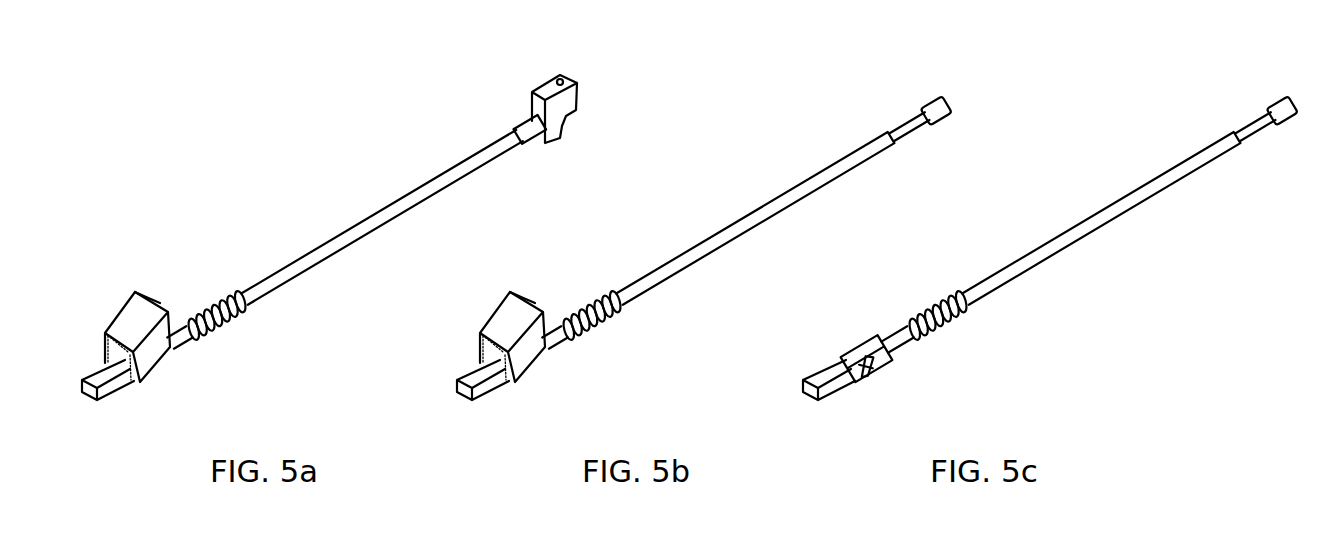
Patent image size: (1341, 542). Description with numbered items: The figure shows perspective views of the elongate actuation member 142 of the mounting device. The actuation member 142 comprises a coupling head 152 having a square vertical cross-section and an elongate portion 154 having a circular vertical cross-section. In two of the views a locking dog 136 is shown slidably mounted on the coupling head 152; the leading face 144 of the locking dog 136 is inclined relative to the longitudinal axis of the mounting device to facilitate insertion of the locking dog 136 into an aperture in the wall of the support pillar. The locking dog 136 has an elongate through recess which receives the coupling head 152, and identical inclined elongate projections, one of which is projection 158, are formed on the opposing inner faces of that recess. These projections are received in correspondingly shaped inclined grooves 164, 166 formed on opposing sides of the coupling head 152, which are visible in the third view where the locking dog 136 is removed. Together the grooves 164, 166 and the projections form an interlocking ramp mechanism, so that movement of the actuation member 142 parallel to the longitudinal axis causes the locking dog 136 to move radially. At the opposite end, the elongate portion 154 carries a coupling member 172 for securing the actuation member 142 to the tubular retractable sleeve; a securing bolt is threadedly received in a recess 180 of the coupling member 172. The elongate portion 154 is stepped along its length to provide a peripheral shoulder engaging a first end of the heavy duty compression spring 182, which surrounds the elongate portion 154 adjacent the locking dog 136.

In FIG. 5A, the locking dog 136 is at (153, 358).
In FIG. 5B, the locking dog 136 is at (528, 358).
In FIG. 5A, the actuation member 142 is at (300, 189).
In FIG. 5B, the actuation member 142 is at (729, 194).
In FIG. 5C, the actuation member 142 is at (1075, 194).
In FIG. 5A, the leading face 144 is at (127, 318).
In FIG. 5B, the leading face 144 is at (502, 318).
In FIG. 5A, the coupling head 152 is at (110, 393).
In FIG. 5B, the coupling head 152 is at (485, 393).
In FIG. 5C, the coupling head 152 is at (831, 393).
In FIG. 5A, the elongate portion 154 is at (356, 232).
In FIG. 5B, the elongate portion 154 is at (746, 223).
In FIG. 5C, the elongate portion 154 is at (1089, 225).
In FIG. 5A, the elongate projection 158 is at (104, 335).
In FIG. 5B, the elongate projection 158 is at (480, 350).
In FIG. 5C, the groove 164 is at (867, 358).
In FIG. 5C, the groove 166 is at (867, 366).
In FIG. 5A, the coupling member 172 is at (573, 99).
In FIG. 5A, the recess 180 is at (556, 78).
In FIG. 5A, the heavy duty compression spring 182 is at (217, 315).
In FIG. 5B, the heavy duty compression spring 182 is at (592, 315).
In FIG. 5C, the heavy duty compression spring 182 is at (938, 315).